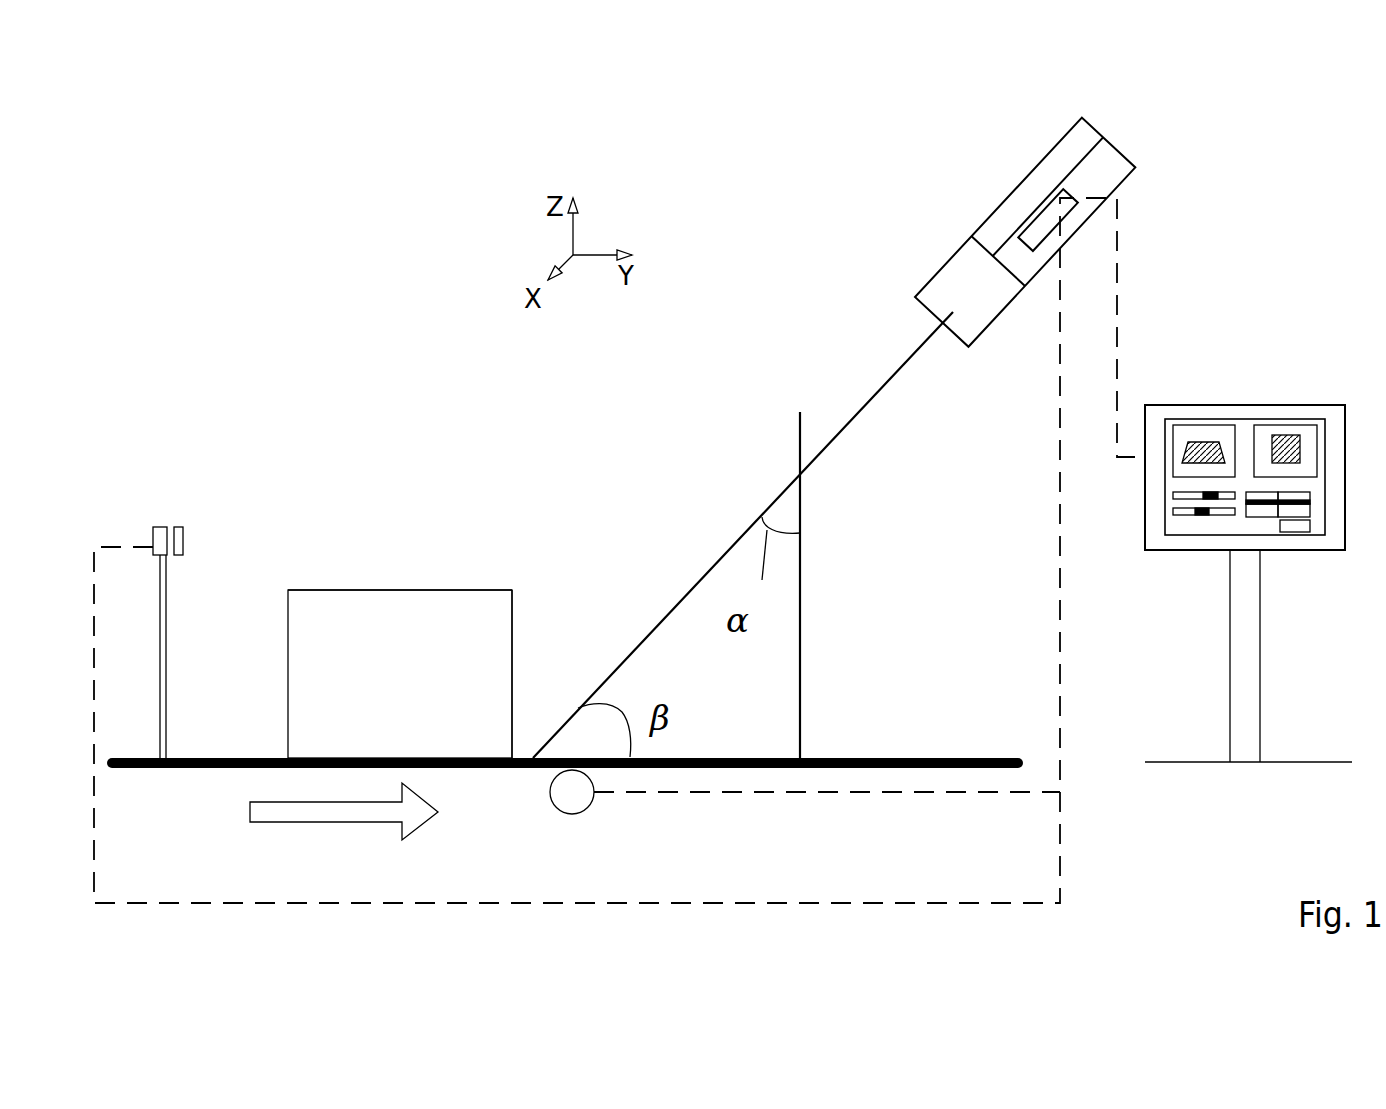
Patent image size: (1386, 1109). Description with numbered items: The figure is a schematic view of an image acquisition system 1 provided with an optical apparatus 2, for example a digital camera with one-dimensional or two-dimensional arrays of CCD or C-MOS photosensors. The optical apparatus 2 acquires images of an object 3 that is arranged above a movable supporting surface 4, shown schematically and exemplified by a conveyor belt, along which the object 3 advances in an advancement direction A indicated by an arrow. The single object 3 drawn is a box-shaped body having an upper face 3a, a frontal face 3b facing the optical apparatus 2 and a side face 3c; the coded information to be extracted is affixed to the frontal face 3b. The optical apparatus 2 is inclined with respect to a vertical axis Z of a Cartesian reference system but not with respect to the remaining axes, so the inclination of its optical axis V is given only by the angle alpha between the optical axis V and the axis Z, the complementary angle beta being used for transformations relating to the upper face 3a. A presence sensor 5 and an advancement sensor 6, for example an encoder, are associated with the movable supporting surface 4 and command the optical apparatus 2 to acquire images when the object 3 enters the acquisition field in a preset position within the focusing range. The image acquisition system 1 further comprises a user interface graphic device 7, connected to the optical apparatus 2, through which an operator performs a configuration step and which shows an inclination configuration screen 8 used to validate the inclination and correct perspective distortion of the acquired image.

The image acquisition system 1 is at (335, 200).
The optical apparatus 2 is at (966, 210).
The object 3 is at (411, 579).
The upper face 3a is at (437, 590).
The frontal face 3b is at (512, 630).
The side face 3c is at (400, 674).
The movable supporting surface 4 is at (220, 770).
The presence sensor 5 is at (153, 545).
The advancement sensor 6 is at (587, 807).
The user interface graphic device 7 is at (1298, 405).
The inclination configuration screen 8 is at (1228, 682).
The optical axis V is at (668, 612).
The vertical axis Z is at (800, 610).
The advancement direction A is at (327, 822).